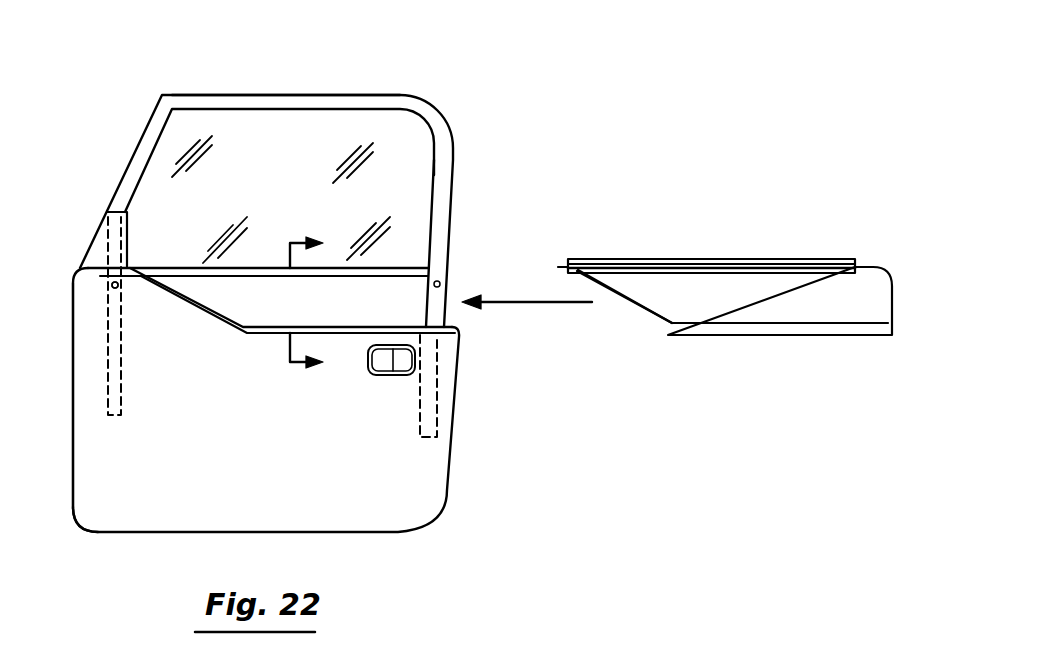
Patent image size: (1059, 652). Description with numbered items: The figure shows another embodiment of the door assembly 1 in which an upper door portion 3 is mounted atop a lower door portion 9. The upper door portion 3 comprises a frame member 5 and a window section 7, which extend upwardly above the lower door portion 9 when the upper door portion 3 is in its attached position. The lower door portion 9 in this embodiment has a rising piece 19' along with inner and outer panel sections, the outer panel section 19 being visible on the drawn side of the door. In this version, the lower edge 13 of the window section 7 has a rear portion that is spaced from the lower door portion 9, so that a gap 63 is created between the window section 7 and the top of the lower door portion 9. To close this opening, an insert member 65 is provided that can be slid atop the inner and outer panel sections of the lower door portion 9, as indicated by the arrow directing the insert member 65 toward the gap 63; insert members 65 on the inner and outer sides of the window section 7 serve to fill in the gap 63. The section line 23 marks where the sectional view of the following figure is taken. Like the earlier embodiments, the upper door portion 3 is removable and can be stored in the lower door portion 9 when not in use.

The door assembly 1 is at (478, 84).
The upper door portion 3 is at (132, 124).
The frame member 5 is at (362, 103).
The window section 7 is at (300, 183).
The lower door portion 9 is at (278, 462).
The lower edge of the window section 13 is at (397, 268).
The outer panel section 19 is at (71, 547).
The rising piece 19' is at (93, 262).
The section line 23 is at (283, 303).
The gap 63 is at (314, 311).
The insert member 65 is at (739, 297).